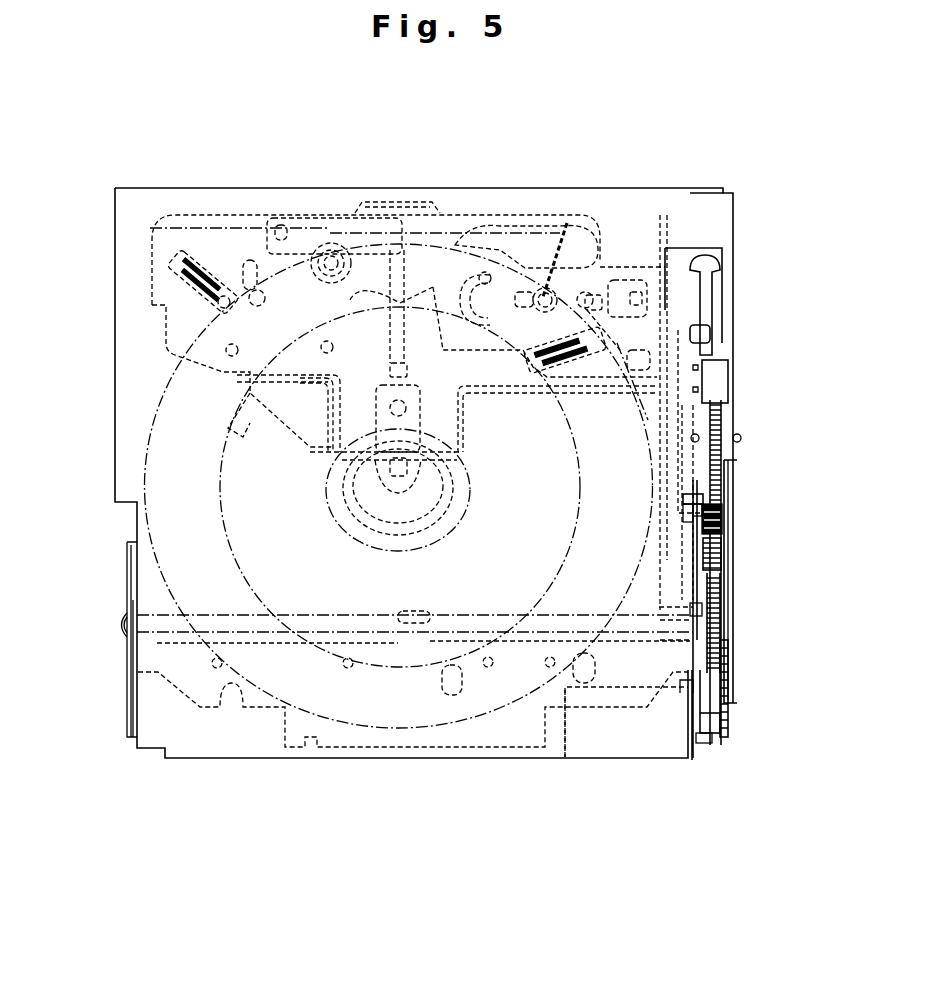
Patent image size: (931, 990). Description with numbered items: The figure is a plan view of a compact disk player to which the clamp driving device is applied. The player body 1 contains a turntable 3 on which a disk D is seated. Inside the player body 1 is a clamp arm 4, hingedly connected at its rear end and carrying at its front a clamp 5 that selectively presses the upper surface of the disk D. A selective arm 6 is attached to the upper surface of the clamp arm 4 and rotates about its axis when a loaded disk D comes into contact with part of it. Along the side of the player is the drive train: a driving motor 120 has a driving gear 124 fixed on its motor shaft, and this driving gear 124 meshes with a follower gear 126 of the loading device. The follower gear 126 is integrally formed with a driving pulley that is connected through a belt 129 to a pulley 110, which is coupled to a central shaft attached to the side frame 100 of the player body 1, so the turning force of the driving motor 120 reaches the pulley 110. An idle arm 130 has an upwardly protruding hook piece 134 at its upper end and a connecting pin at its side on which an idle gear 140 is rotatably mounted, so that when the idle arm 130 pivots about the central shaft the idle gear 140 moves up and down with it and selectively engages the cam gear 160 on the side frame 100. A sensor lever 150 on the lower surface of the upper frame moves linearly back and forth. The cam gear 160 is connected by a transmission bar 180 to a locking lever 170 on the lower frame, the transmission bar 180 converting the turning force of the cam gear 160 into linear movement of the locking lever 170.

The player body 1 is at (103, 180).
The clamp arm 4 is at (213, 227).
The selective arm 6 is at (612, 265).
The clamp 5 is at (342, 492).
The turntable 3 is at (360, 514).
The disk D is at (390, 655).
The driving motor 120 is at (645, 750).
The driving gear 124 is at (707, 745).
The follower gear 126 is at (718, 740).
The belt 129 is at (733, 651).
The pulley 110 is at (737, 595).
The side frame 100 is at (698, 583).
The idle arm 130 is at (713, 540).
The idle gear 140 is at (722, 510).
The hook piece 134 is at (702, 497).
The cam gear 160 is at (718, 410).
The transmission bar 180 is at (723, 357).
The sensor lever 150 is at (690, 319).
The locking lever 170 is at (717, 292).